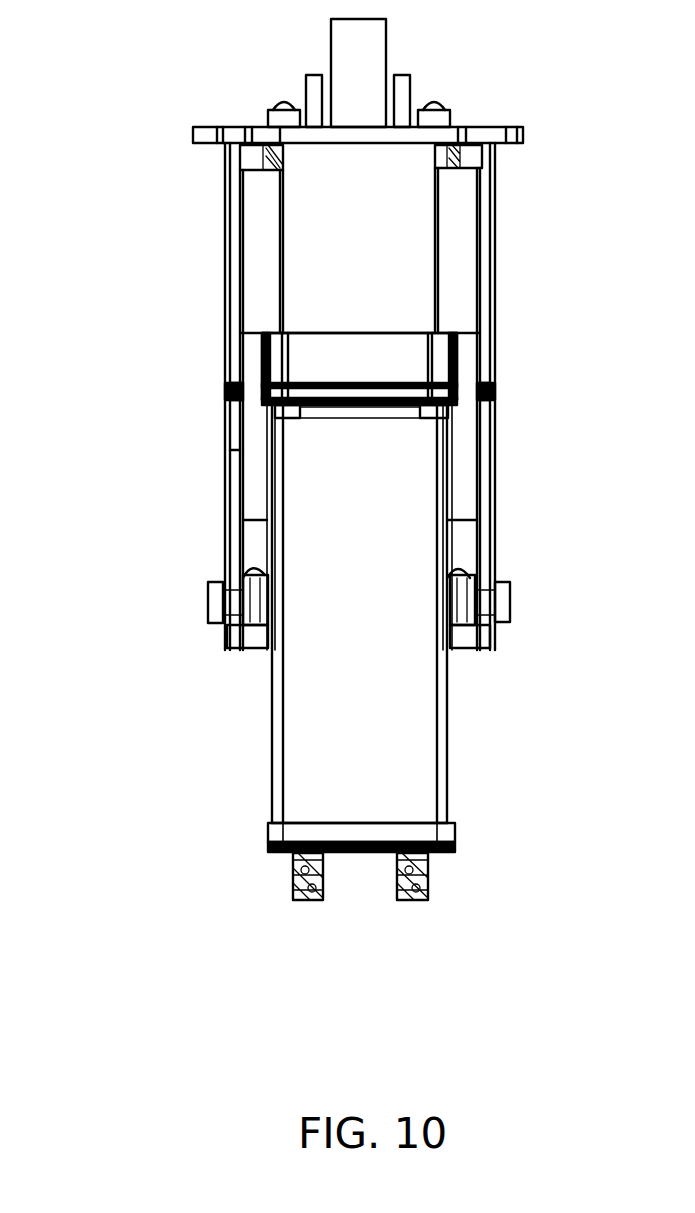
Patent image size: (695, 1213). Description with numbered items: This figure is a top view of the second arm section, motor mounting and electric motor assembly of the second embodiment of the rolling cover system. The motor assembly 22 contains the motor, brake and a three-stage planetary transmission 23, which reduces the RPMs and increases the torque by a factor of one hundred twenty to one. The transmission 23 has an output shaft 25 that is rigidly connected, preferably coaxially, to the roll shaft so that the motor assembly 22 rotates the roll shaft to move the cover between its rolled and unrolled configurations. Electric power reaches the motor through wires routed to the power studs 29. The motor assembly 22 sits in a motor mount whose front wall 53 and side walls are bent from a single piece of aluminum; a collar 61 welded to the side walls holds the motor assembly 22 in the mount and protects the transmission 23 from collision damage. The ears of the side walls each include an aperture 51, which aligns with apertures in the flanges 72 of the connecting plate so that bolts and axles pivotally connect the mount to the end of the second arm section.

The motor assembly 22 is at (370, 650).
The transmission 23 is at (315, 358).
The output shaft 25 is at (365, 75).
The power studs 29 is at (313, 902).
The aperture 51 is at (513, 597).
The front wall 53 is at (415, 130).
The collar 61 is at (375, 252).
The flanges 72 is at (455, 565).